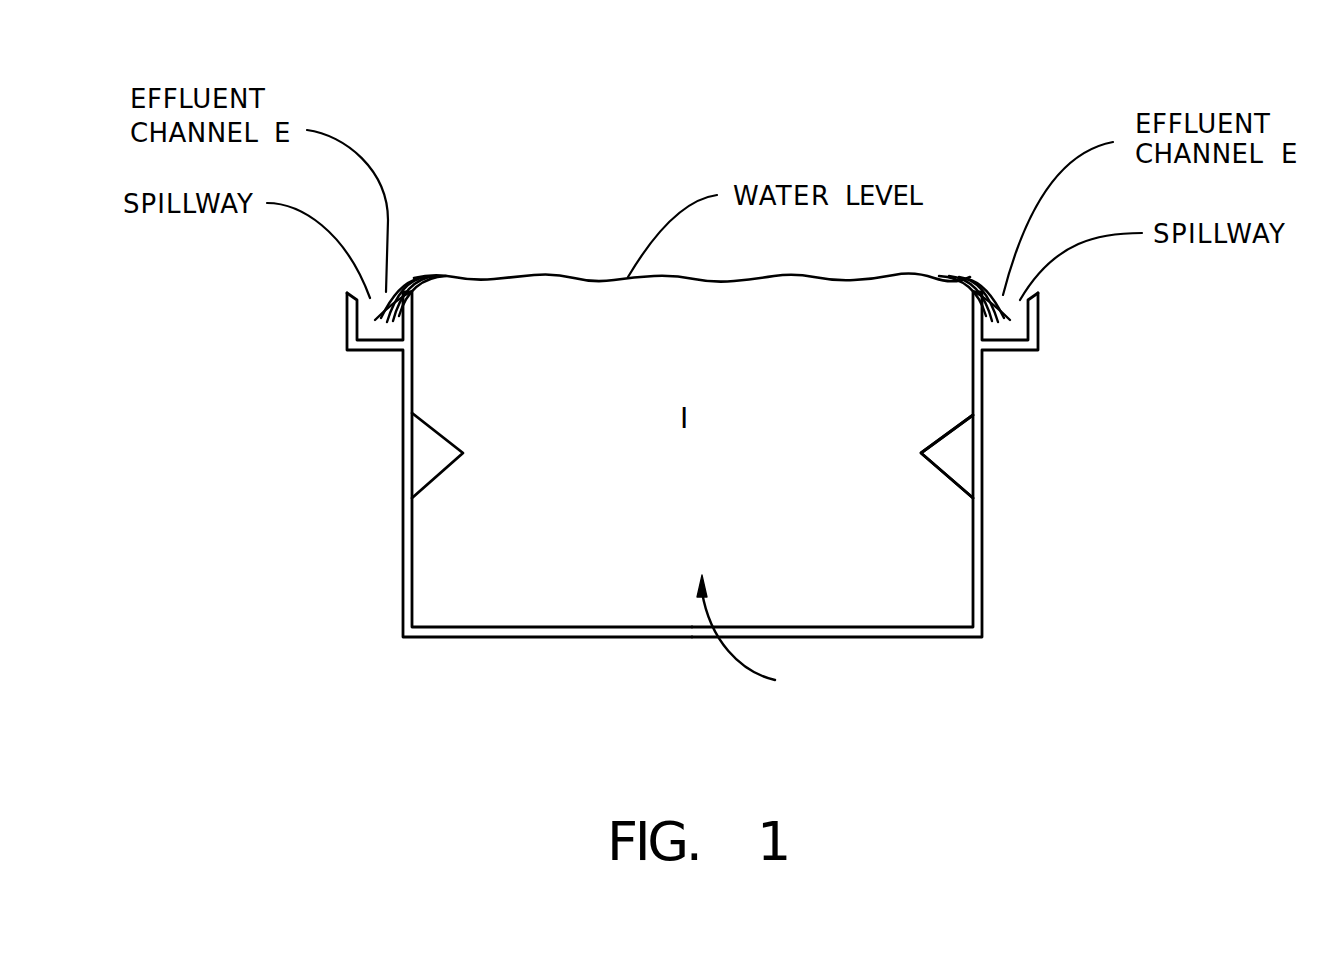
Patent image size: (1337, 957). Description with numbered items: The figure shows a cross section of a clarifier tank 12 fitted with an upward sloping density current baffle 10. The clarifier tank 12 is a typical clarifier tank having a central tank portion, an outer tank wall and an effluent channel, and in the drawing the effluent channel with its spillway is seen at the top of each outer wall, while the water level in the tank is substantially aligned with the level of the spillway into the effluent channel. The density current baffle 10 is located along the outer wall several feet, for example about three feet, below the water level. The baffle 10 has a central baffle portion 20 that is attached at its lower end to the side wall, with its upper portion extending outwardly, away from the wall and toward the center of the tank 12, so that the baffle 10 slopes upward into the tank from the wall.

The density current baffle 10 is at (905, 416).
The clarifier tank 12 is at (974, 128).
The central baffle portion 20 is at (943, 473).